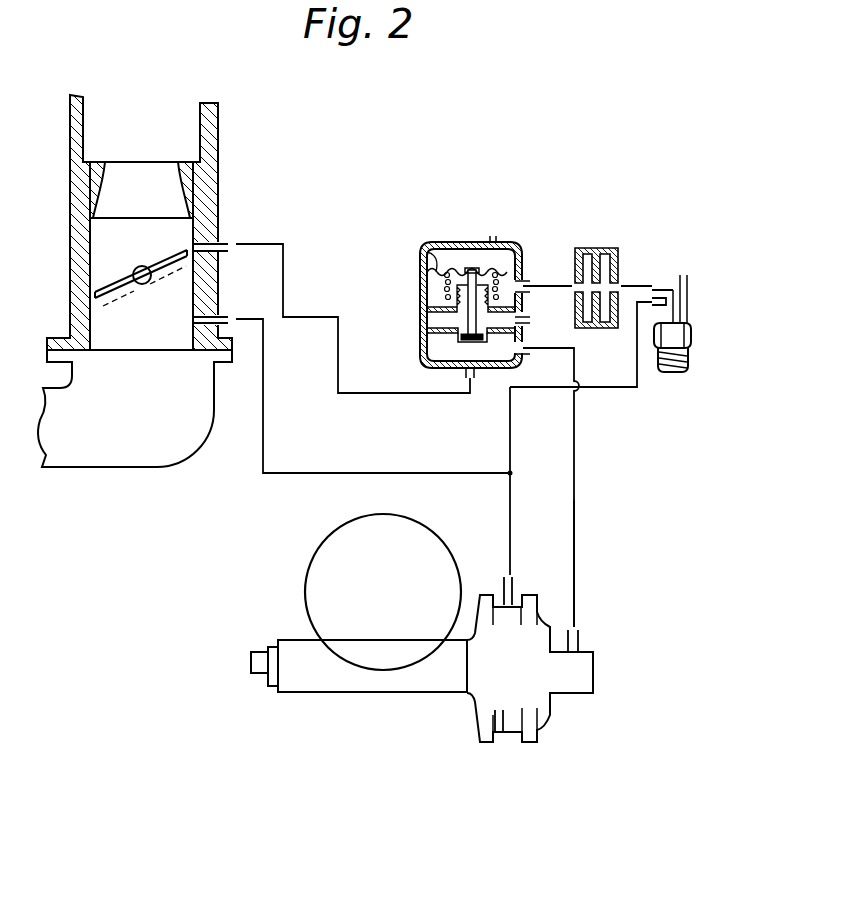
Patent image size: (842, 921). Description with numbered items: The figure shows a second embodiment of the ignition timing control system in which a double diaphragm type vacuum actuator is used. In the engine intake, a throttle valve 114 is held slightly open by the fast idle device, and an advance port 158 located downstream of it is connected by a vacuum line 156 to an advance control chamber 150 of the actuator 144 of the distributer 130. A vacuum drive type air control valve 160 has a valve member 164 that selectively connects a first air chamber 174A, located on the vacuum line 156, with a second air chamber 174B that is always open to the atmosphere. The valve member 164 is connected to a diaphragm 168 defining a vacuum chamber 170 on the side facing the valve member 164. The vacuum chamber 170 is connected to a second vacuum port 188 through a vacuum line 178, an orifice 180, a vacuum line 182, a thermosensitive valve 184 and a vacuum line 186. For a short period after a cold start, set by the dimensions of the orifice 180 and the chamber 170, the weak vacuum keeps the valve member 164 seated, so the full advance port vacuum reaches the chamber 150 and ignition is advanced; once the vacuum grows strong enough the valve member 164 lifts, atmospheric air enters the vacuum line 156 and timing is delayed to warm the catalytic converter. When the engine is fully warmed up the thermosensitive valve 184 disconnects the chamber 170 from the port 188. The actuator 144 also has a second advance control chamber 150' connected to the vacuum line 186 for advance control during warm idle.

The throttle valve 114 is at (106, 300).
The advance port 158 is at (224, 242).
The second vacuum port 188 is at (224, 318).
The vacuum line 186 is at (470, 473).
The air control valve 160 is at (437, 285).
The diaphragm 168 is at (430, 254).
The vacuum chamber 170 is at (432, 287).
The second air chamber 174B is at (430, 314).
The first air chamber 174A is at (427, 340).
The valve member 164 is at (459, 340).
The vacuum line 178 is at (549, 286).
The orifice 180 is at (603, 247).
The vacuum line 182 is at (641, 286).
The thermosensitive valve 184 is at (694, 291).
The vacuum line 156 is at (578, 478).
The distributer 130 is at (415, 708).
The actuator 144 is at (553, 709).
The advance control chamber 150 is at (541, 597).
The second advance control chamber 150' is at (501, 747).